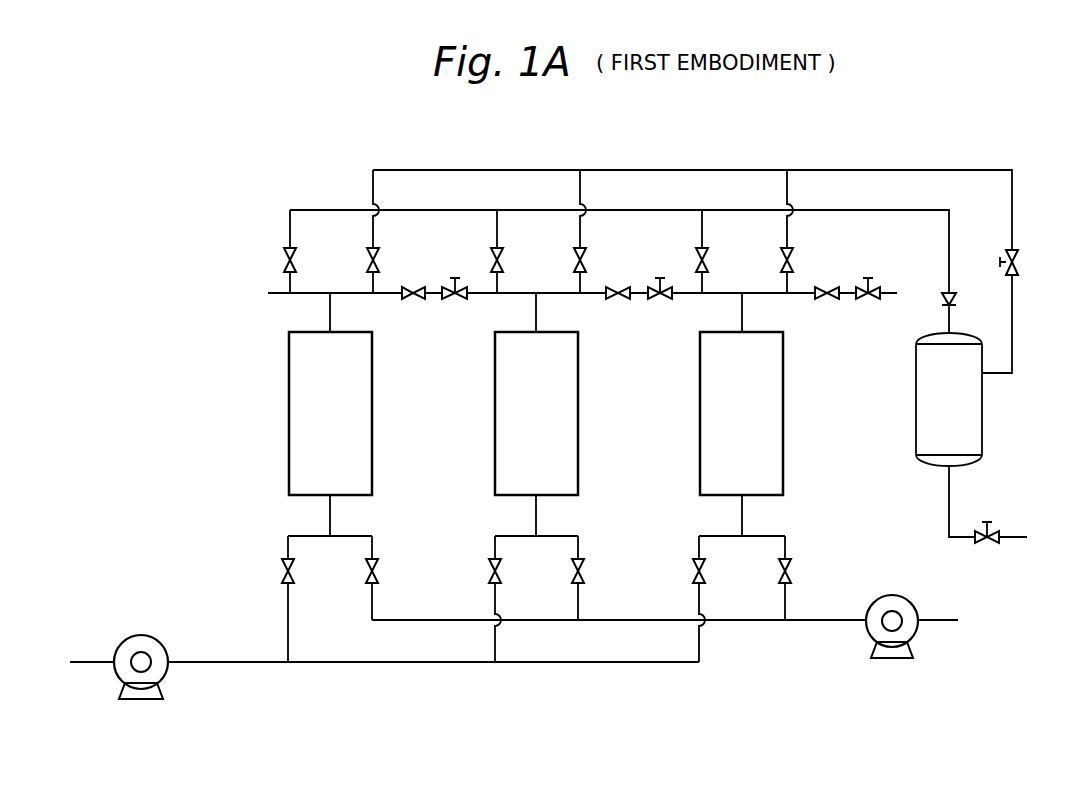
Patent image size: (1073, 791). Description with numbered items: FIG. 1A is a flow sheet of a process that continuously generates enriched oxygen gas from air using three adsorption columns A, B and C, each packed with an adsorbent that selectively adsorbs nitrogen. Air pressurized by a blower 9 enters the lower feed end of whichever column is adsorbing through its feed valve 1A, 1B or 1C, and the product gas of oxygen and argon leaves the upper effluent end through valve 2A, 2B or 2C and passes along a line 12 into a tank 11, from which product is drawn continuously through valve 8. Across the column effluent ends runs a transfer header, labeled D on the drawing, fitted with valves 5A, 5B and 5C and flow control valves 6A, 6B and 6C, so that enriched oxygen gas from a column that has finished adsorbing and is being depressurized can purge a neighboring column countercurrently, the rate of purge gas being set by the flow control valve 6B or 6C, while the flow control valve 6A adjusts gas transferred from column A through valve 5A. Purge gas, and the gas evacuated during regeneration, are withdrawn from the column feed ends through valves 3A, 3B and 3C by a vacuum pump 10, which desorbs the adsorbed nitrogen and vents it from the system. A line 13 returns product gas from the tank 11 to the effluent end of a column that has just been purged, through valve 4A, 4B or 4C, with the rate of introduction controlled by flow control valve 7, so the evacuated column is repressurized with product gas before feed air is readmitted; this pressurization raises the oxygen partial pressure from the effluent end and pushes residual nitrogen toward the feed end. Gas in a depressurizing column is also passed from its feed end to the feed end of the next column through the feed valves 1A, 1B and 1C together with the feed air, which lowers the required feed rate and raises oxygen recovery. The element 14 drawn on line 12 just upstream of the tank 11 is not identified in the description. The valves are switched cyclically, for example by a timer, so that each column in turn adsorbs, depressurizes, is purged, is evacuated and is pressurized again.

The valve 1A is at (282, 571).
The valve 1B is at (493, 571).
The valve 1C is at (696, 568).
The valve 2A is at (282, 260).
The valve 2B is at (493, 262).
The valve 2C is at (698, 264).
The valve 3A is at (365, 571).
The valve 3B is at (577, 571).
The valve 3C is at (777, 568).
The valve 4A is at (370, 260).
The valve 4B is at (578, 260).
The valve 4C is at (786, 264).
The valve 5A is at (413, 299).
The valve 5B is at (618, 299).
The valve 5C is at (827, 299).
The flow control valve 6A is at (455, 299).
The flow control valve 6B is at (660, 299).
The flow control valve 6C is at (868, 299).
The flow control valve 7 is at (1020, 262).
The valve 8 is at (987, 543).
The blower 9 is at (146, 634).
The vacuum pump 10 is at (891, 595).
The tank 11 is at (949, 435).
The line 12 is at (660, 210).
The line 13 is at (645, 170).
The check valve 14 is at (957, 300).
The first adsorption column A is at (330, 414).
The second adsorption column B is at (536, 414).
The third adsorption column C is at (741, 414).
The line D is at (584, 293).